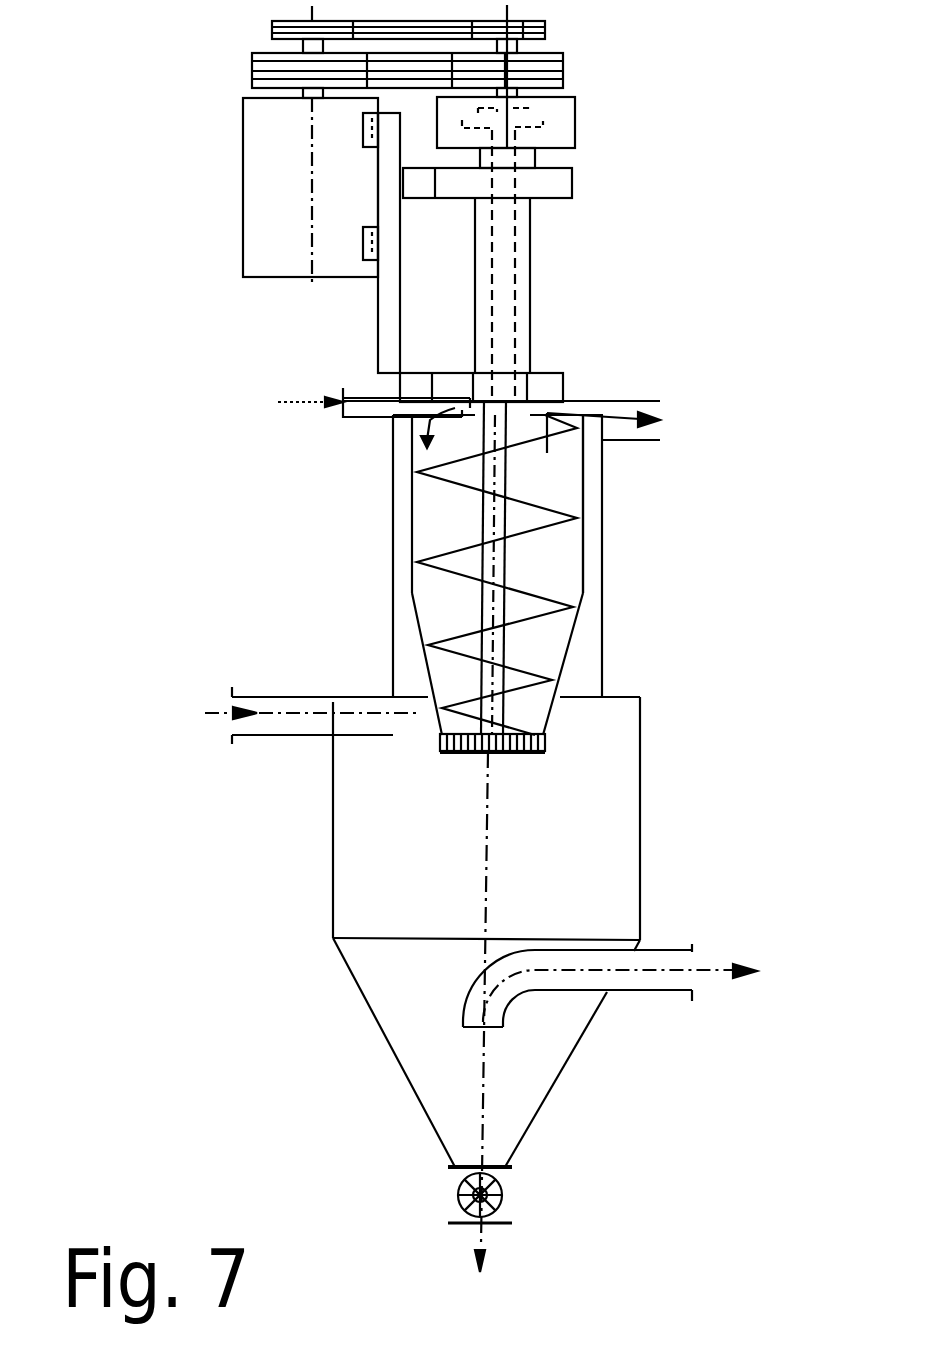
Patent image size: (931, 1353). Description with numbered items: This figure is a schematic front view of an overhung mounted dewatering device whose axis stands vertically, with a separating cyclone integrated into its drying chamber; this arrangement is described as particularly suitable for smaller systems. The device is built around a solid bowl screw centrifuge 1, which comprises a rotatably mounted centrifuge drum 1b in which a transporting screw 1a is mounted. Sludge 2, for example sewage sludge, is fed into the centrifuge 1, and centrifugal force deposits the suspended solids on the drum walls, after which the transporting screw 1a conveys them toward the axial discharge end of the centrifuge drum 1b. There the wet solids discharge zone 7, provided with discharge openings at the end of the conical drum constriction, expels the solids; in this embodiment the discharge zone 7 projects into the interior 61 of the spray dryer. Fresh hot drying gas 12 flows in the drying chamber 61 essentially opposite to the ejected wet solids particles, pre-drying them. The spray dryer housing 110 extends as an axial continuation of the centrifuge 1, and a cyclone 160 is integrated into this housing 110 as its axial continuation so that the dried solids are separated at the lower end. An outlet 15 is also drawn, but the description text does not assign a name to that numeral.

The solid bowl screw centrifuge 1 is at (599, 575).
The transporting screw 1a is at (487, 595).
The centrifuge drum 1b is at (582, 592).
The sludge 2 is at (310, 400).
The discharge zone 7 is at (552, 743).
The drying gas 12 is at (207, 713).
The outlet pipe 15 is at (708, 972).
The drying chamber 61 is at (403, 868).
The spray dryer housing 110 is at (657, 860).
The cyclone 160 is at (547, 1088).